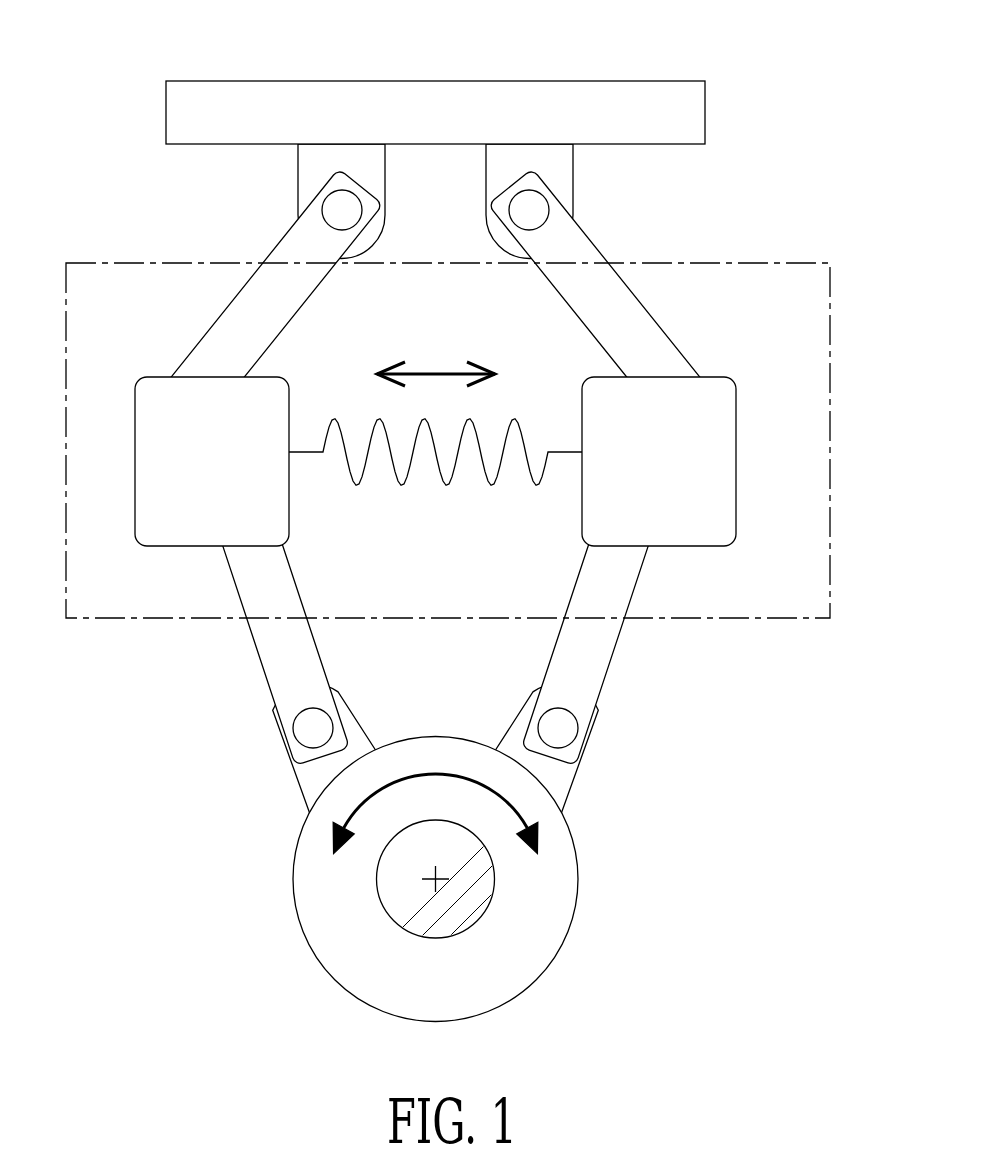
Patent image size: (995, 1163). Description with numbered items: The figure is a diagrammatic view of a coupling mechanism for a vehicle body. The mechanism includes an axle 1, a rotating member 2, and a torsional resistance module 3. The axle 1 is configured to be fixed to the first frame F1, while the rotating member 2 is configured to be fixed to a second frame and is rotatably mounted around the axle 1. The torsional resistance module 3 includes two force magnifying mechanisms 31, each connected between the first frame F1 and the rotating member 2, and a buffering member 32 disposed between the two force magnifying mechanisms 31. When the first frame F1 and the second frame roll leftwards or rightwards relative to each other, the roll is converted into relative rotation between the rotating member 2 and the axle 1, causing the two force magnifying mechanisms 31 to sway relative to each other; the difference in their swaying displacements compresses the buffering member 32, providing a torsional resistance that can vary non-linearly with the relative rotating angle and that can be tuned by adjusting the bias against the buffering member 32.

The axle 1 is at (463, 903).
The rotating member 2 is at (562, 908).
The torsional resistance module 3 is at (448, 383).
The force magnifying mechanism 31 is at (145, 466).
The buffering member 32 is at (493, 483).
The first frame F1 is at (458, 95).